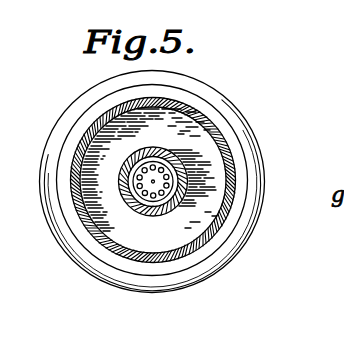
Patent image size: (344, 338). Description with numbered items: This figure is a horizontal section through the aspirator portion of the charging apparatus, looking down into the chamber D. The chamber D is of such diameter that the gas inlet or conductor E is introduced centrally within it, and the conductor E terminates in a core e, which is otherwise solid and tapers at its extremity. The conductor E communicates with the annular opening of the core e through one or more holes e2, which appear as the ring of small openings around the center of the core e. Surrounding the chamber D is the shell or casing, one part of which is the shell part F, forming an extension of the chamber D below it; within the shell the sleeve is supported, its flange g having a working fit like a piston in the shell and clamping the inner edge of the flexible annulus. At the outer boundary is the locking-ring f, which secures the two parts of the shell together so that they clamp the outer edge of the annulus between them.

The shell part F is at (222, 133).
The flange of the sleeve g is at (214, 166).
The locking-ring f is at (257, 180).
The chamber D is at (150, 170).
The gas inlet or conductor E is at (153, 215).
The core e is at (153, 181).
The holes e2 is at (152, 172).